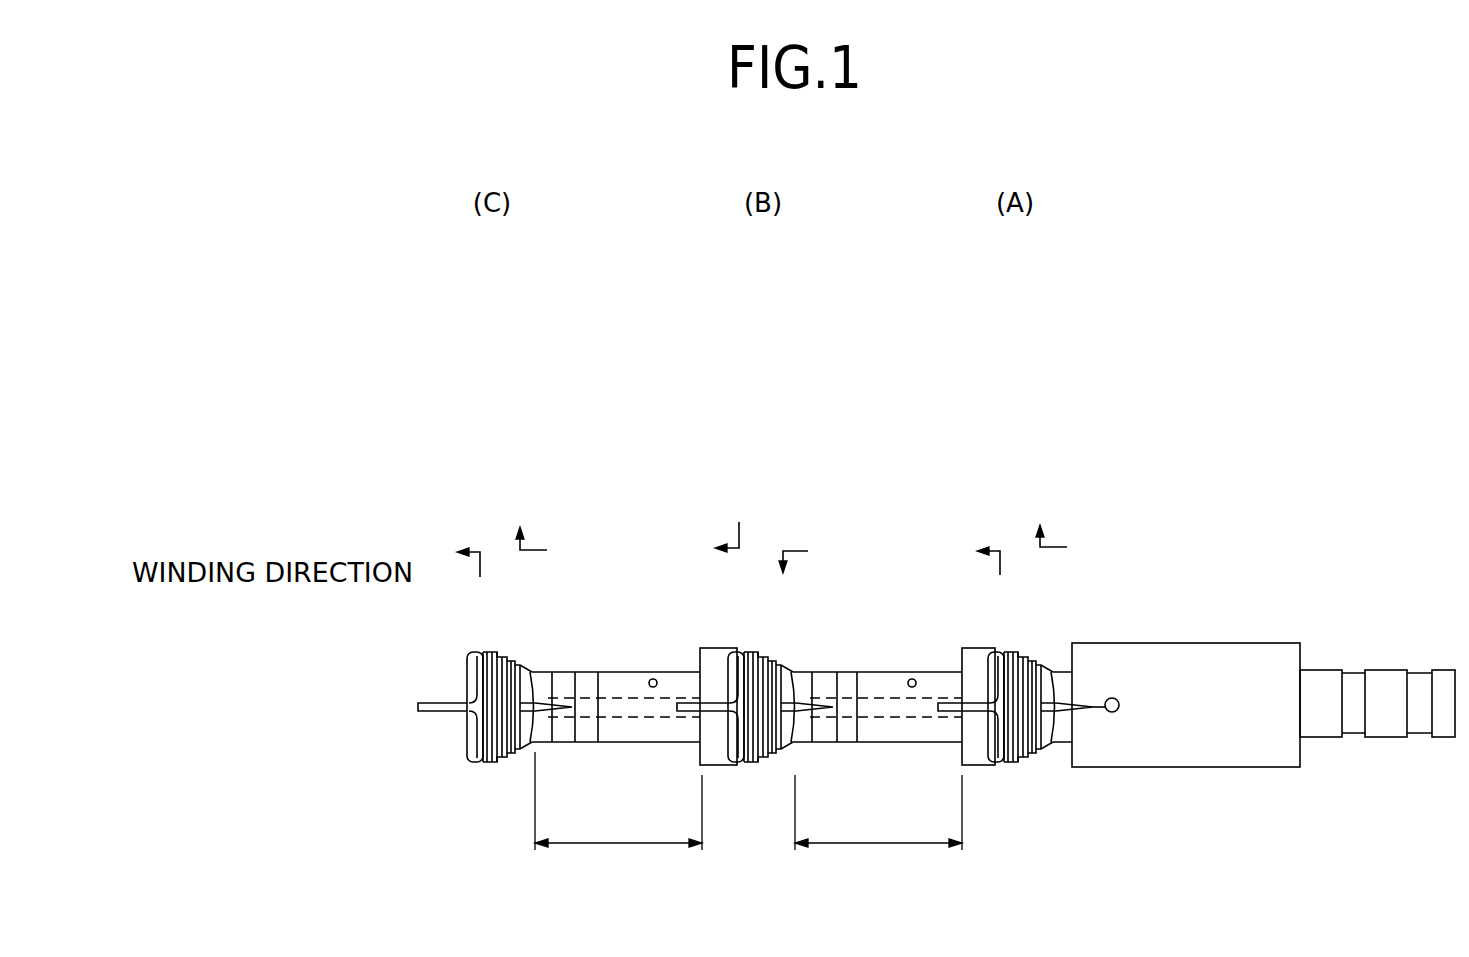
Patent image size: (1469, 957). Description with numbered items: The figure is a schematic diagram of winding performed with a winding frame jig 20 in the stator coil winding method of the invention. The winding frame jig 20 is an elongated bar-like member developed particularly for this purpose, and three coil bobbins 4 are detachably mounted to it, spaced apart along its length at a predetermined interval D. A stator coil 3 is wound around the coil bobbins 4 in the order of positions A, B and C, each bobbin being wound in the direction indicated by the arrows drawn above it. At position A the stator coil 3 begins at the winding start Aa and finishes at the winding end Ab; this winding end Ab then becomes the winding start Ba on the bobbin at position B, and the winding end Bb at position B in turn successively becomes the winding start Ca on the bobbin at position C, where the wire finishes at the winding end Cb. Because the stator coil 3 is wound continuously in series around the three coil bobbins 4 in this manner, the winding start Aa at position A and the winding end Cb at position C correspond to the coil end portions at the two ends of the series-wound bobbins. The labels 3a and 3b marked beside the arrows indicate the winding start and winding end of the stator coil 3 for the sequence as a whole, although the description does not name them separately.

The stator coil 3 is at (497, 652).
The winding start 3a is at (1058, 547).
The winding end 3b is at (480, 550).
The coil bobbin 4 is at (470, 765).
The winding frame jig 20 is at (1226, 785).
The winding start at position C Ca is at (548, 293).
The winding end at position C Cb is at (445, 298).
The winding start at position B Ba is at (815, 268).
The winding end at position B Bb is at (717, 315).
The winding start at position A Aa is at (1072, 315).
The winding end at position A Ab is at (977, 308).
The predetermined interval D is at (748, 801).